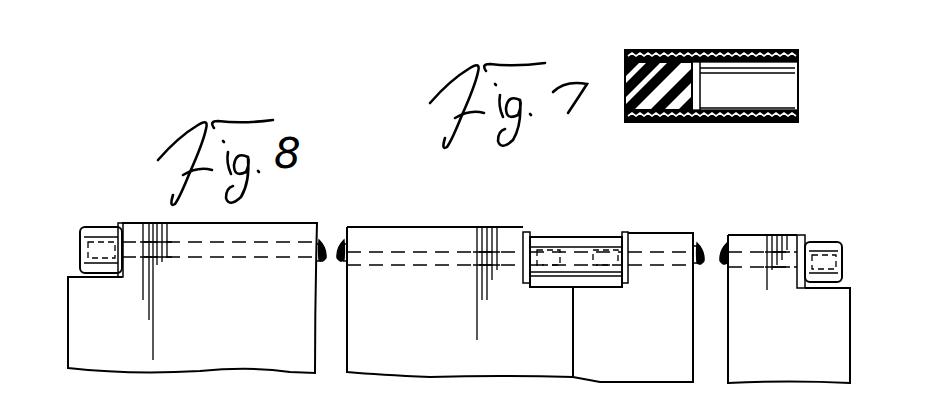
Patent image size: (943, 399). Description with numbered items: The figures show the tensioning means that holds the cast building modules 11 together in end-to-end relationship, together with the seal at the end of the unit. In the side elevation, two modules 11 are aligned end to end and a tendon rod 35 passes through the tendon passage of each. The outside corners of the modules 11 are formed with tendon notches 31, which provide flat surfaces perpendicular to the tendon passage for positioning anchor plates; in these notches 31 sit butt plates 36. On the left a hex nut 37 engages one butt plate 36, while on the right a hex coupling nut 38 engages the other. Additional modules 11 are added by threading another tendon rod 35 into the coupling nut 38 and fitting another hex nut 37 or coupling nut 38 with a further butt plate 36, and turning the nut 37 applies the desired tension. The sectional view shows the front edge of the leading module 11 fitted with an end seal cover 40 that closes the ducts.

In FIG. 7, the module 11 is at (762, 48).
In FIG. 8, the module 11 is at (203, 327).
In FIG. 8, the tendon notch 31 is at (75, 277).
In FIG. 8, the tendon rod 35 is at (332, 240).
In FIG. 8, the butt plate 36 is at (119, 222).
In FIG. 8, the hex nut 37 is at (97, 227).
In FIG. 8, the hex coupling nut 38 is at (573, 240).
In FIG. 7, the end seal cover 40 is at (688, 102).